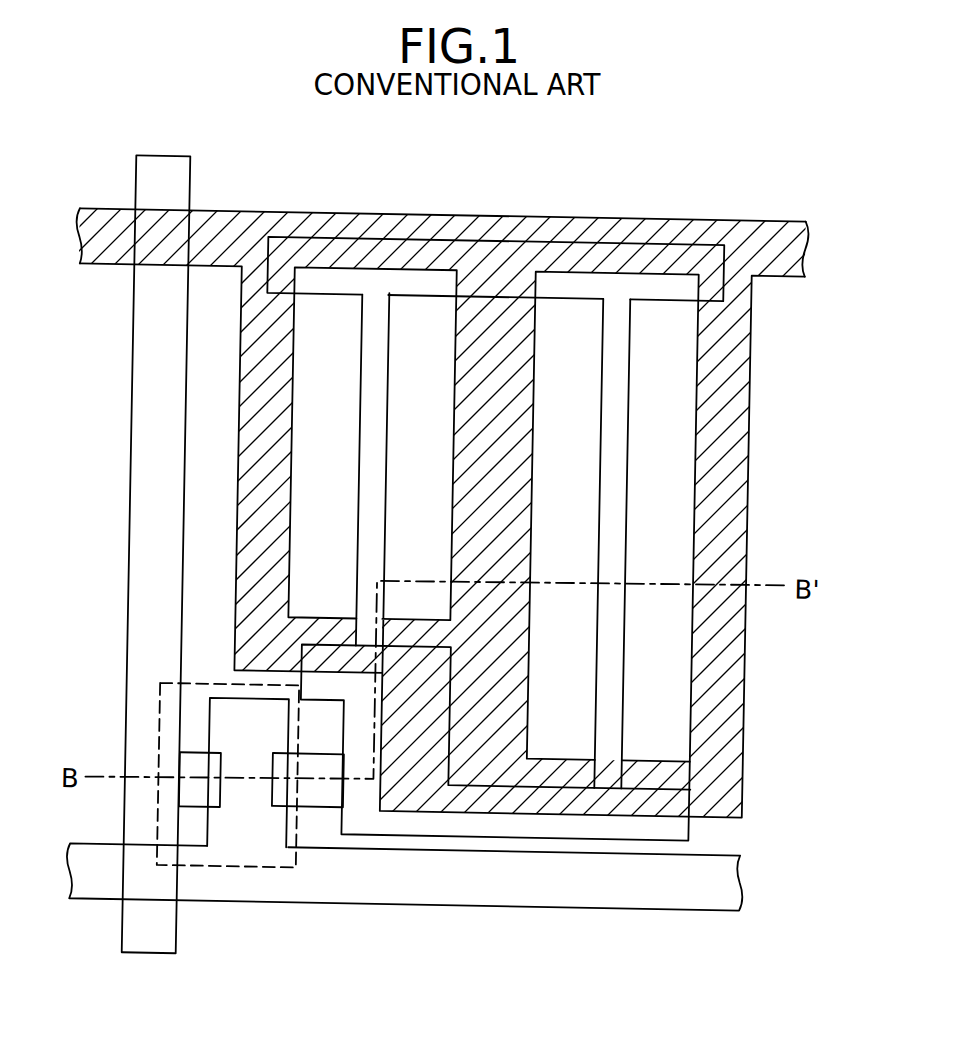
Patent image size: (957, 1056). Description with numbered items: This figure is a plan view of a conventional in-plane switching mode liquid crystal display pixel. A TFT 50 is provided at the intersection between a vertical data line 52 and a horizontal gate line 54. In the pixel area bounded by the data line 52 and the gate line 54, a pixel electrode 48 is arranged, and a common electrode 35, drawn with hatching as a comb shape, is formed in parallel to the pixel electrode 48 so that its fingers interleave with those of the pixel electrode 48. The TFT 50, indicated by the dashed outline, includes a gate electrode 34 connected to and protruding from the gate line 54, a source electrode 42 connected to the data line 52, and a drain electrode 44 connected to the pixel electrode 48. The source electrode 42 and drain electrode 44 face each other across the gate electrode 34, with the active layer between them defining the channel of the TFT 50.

The gate electrode 34 is at (241, 847).
The common electrode 35 is at (741, 437).
The source electrode 42 is at (205, 797).
The drain electrode 44 is at (323, 807).
The pixel electrode 48 is at (626, 540).
The TFT 50 is at (221, 677).
The data line 52 is at (161, 952).
The gate line 54 is at (746, 879).